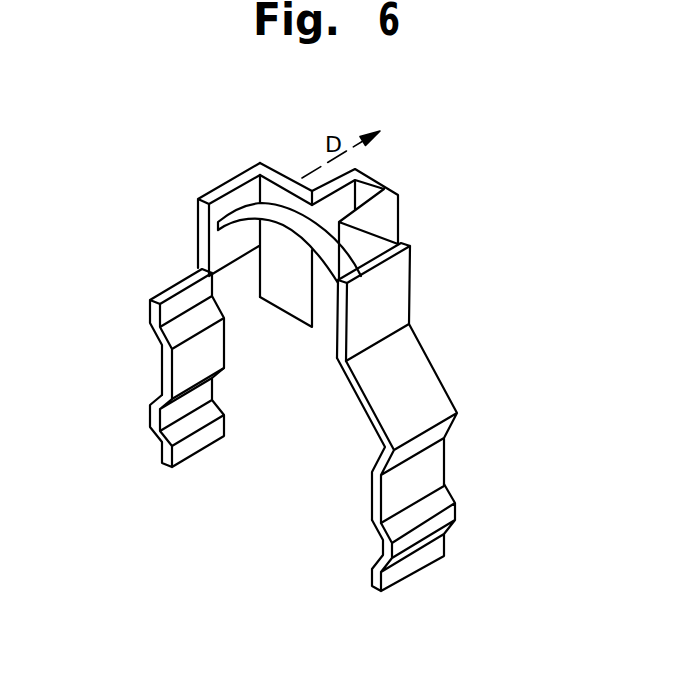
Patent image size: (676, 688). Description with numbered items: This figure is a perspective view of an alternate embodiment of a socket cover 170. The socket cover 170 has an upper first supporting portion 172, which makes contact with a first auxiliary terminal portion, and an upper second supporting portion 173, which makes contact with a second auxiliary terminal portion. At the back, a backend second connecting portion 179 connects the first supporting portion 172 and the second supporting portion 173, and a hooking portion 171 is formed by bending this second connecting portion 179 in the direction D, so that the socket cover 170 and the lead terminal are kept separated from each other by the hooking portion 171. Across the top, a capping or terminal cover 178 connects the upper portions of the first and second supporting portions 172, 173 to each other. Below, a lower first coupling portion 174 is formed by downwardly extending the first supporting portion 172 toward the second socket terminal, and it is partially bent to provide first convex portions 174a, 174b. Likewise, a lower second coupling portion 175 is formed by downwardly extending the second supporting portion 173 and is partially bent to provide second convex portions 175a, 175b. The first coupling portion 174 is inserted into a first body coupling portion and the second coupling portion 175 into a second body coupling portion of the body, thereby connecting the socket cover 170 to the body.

The socket cover 170 is at (399, 167).
The hooking portion 171 is at (387, 220).
The first supporting portion 172 is at (247, 190).
The second supporting portion 173 is at (383, 301).
The first coupling portion 174 is at (50, 312).
The first convex portion 174a is at (153, 313).
The first convex portion 174b is at (153, 411).
The second coupling portion 175 is at (560, 408).
The second convex portion 175a is at (435, 430).
The second convex portion 175b is at (435, 532).
The terminal cover 178 is at (247, 212).
The second connecting portion 179 is at (288, 178).